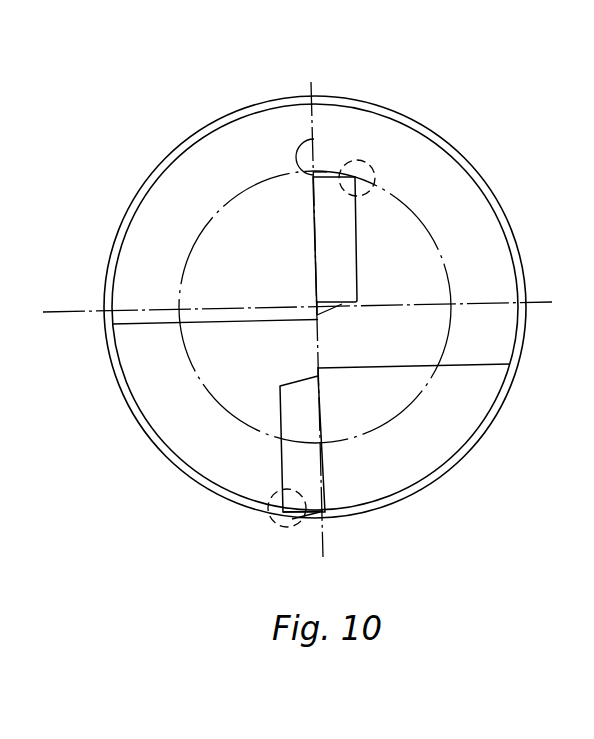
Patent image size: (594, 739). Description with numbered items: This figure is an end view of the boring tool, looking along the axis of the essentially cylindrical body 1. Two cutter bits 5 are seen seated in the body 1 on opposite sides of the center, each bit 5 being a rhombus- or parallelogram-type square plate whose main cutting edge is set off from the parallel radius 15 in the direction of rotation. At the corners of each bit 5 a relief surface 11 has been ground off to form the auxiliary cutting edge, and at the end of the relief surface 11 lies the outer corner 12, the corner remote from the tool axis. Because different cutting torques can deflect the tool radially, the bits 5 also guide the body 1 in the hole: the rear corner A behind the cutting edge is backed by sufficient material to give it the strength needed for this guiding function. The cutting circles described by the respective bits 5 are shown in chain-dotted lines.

The cylindrical body 1 is at (473, 190).
The cutter bit 5 is at (338, 243).
The relief surface 11 is at (327, 172).
The outer corner 12 is at (313, 142).
The parallel radius 15 is at (310, 117).
The corner A is at (372, 168).